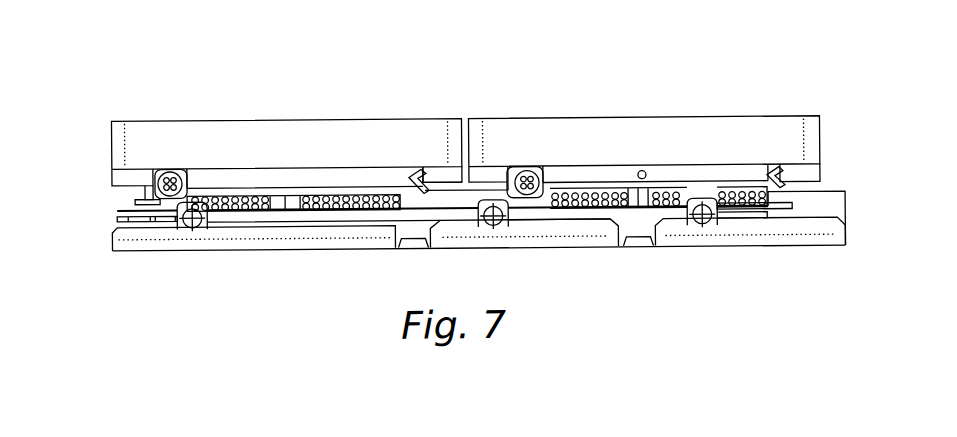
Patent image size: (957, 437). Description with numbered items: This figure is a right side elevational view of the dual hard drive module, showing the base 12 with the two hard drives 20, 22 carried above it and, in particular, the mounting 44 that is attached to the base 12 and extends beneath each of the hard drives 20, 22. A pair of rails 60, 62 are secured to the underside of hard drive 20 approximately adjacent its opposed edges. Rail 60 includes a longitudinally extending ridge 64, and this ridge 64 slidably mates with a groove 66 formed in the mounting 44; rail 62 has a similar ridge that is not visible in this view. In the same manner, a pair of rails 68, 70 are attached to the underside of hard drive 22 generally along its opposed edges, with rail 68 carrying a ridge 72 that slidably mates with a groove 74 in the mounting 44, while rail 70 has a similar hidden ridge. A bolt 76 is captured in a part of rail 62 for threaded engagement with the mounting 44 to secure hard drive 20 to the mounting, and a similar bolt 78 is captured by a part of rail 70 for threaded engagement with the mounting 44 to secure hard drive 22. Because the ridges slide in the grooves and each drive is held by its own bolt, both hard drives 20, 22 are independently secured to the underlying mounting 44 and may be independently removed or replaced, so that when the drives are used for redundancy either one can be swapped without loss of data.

The base 12 is at (810, 249).
The hard drive 20 is at (288, 124).
The hard drive 22 is at (662, 119).
The mounting 44 is at (440, 202).
The rail 60 is at (423, 172).
The rail 62 is at (120, 174).
The ridge 64 is at (442, 177).
The groove 66 is at (424, 191).
The rail 68 is at (813, 176).
The rail 70 is at (495, 182).
The ridge 72 is at (780, 170).
The groove 74 is at (772, 177).
The bolt 76 is at (168, 168).
The bolt 78 is at (532, 170).